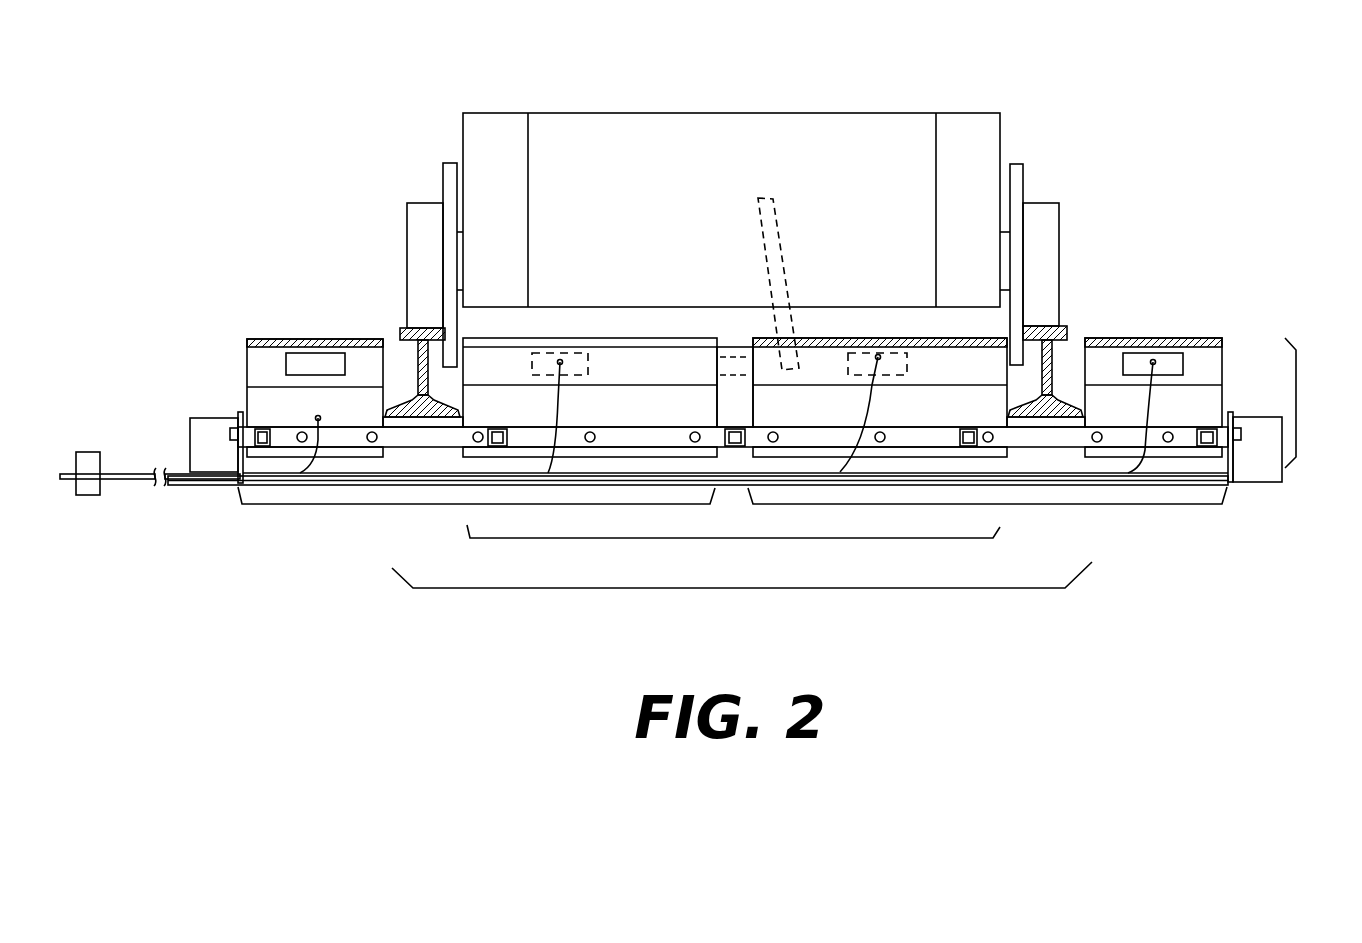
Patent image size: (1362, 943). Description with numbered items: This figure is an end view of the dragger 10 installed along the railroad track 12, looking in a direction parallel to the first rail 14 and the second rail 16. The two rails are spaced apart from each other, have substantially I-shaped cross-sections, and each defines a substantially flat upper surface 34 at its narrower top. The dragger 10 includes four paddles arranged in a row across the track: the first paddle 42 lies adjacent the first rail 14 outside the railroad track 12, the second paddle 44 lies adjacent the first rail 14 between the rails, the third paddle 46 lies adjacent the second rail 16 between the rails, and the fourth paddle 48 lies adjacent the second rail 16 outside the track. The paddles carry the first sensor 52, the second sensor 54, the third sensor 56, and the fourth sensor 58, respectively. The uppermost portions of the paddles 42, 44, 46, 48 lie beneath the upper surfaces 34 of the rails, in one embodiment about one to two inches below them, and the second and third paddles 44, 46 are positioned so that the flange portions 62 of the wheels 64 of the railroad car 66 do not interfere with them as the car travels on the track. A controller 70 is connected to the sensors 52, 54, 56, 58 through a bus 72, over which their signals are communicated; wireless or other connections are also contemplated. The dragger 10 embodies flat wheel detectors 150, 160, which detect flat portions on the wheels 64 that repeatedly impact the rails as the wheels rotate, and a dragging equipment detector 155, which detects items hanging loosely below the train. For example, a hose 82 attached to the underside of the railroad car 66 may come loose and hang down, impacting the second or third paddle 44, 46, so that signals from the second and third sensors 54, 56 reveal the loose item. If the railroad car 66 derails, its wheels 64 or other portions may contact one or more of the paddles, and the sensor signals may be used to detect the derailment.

The dragger 10 is at (1309, 403).
The railroad track 12 is at (717, 590).
The first rail 14 is at (400, 333).
The second rail 16 is at (1065, 336).
The upper surface 34 is at (428, 332).
The first paddle 42 is at (255, 362).
The second paddle 44 is at (678, 372).
The third paddle 46 is at (820, 372).
The fourth paddle 48 is at (1208, 345).
The first sensor 52 is at (300, 360).
The second sensor 54 is at (580, 358).
The third sensor 56 is at (900, 357).
The fourth sensor 58 is at (1170, 358).
The flange portion 62 is at (455, 172).
The wheel 64 is at (422, 207).
The railroad car 66 is at (752, 136).
The controller 70 is at (87, 487).
The bus 72 is at (133, 482).
The hose 82 is at (768, 220).
The flat wheel detector 150 is at (455, 504).
The dragging equipment detector 155 is at (745, 538).
The flat wheel detector 160 is at (985, 504).